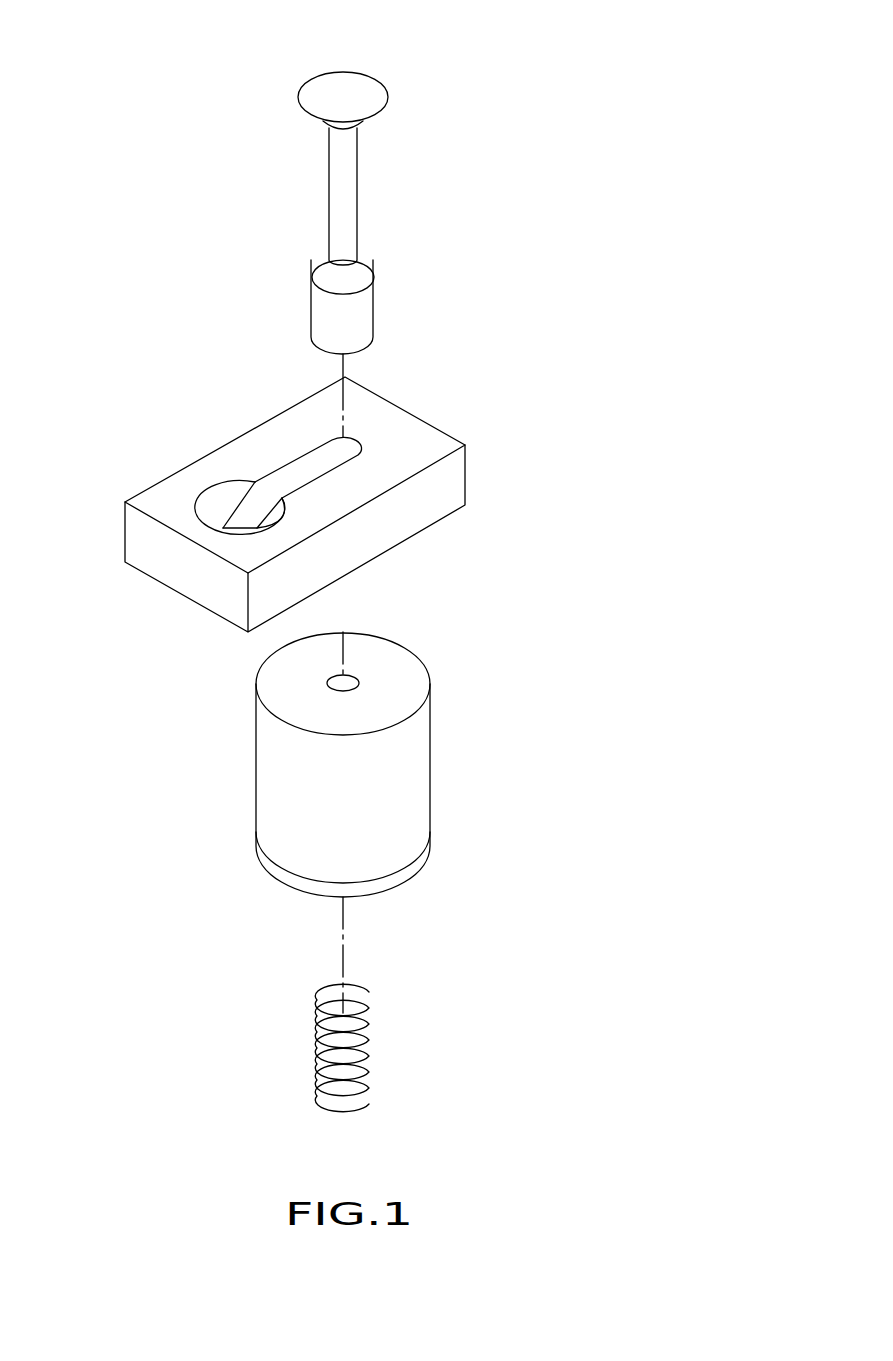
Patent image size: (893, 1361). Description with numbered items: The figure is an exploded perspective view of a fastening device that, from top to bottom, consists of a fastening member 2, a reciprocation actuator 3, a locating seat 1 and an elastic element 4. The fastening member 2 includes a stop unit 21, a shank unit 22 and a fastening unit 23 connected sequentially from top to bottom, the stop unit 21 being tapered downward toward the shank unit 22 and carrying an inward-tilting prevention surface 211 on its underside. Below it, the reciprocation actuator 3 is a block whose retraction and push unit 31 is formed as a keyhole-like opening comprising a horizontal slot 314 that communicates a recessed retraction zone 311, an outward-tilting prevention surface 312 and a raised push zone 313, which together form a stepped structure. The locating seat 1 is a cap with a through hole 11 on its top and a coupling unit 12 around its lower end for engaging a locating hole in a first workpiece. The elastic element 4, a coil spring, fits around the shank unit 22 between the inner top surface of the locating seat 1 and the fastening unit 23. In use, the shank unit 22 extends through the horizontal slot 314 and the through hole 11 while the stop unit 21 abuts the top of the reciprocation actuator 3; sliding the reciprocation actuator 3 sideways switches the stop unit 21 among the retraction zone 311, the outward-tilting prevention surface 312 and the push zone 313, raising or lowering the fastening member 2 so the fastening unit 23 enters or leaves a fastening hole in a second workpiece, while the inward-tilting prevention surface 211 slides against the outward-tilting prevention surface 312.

The locating seat 1 is at (479, 754).
The through hole 11 is at (350, 677).
The coupling unit 12 is at (407, 870).
The fastening member 2 is at (447, 203).
The stop unit 21 is at (353, 80).
The inward-tilting prevention surface 211 is at (325, 124).
The shank unit 22 is at (357, 192).
The fastening unit 23 is at (367, 302).
The reciprocation actuator 3 is at (495, 474).
The retraction and push unit 31 is at (277, 303).
The retraction zone 311 is at (206, 505).
The outward-tilting prevention surface 312 is at (235, 488).
The push zone 313 is at (316, 425).
The horizontal slot 314 is at (302, 472).
The elastic element 4 is at (370, 1020).